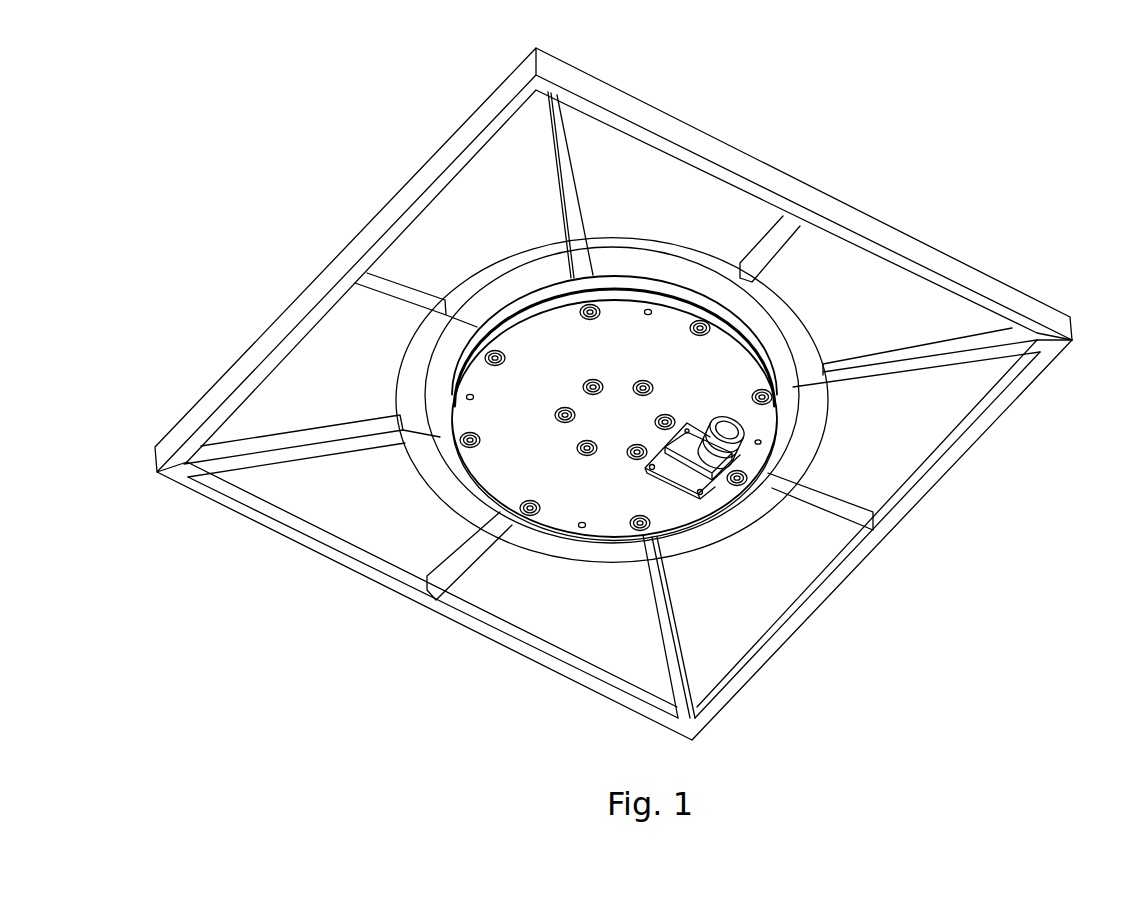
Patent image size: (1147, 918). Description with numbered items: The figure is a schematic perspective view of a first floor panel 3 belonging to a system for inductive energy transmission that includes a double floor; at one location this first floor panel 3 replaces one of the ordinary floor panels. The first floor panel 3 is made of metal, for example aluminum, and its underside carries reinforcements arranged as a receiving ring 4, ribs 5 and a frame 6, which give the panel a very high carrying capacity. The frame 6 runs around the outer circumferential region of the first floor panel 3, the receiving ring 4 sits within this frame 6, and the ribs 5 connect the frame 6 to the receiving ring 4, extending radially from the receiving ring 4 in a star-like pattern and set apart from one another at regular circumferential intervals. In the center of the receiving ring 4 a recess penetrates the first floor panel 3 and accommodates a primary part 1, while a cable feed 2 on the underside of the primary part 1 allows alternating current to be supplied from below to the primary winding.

The primary part 1 is at (712, 373).
The cable feed 2 is at (752, 440).
The first floor panel 3 is at (460, 228).
The receiving ring 4 is at (714, 240).
The ribs 5 is at (572, 156).
The frame 6 is at (745, 146).